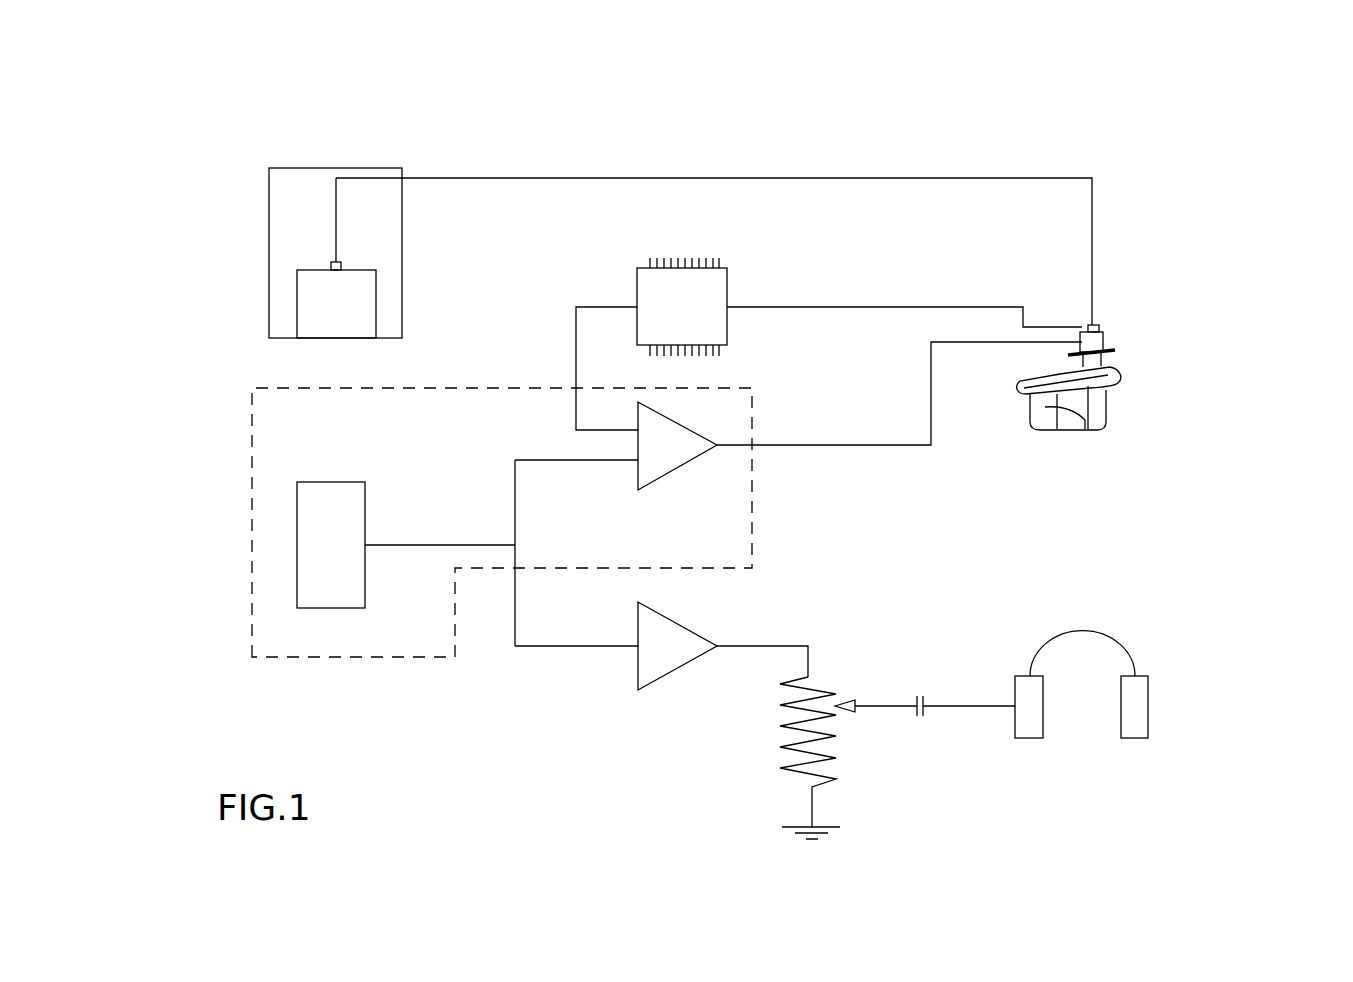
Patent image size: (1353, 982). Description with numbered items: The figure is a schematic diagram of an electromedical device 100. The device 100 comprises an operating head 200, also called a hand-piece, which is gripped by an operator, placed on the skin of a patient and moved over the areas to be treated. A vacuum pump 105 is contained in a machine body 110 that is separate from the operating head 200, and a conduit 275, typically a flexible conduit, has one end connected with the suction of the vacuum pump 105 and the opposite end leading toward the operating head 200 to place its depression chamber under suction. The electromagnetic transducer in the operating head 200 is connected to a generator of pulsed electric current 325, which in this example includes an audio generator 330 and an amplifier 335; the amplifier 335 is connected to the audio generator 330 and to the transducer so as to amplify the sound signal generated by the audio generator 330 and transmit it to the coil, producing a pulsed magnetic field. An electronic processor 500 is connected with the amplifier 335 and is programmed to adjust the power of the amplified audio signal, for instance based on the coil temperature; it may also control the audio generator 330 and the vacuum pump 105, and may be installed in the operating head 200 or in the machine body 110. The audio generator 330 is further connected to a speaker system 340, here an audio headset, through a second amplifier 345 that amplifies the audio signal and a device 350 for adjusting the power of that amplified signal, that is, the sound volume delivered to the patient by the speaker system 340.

The electromedical device 100 is at (1190, 204).
The vacuum pump 105 is at (318, 296).
The machine body 110 is at (292, 188).
The operating head 200 is at (1130, 413).
The conduit 275 is at (832, 177).
The generator of pulsed electric current 325 is at (246, 461).
The audio generator 330 is at (314, 537).
The amplifier 335 is at (660, 450).
The speaker system 340 is at (1162, 642).
The second amplifier 345 is at (655, 656).
The device for adjusting the power of the amplified audio signal 350 is at (838, 654).
The electronic processor 500 is at (706, 298).